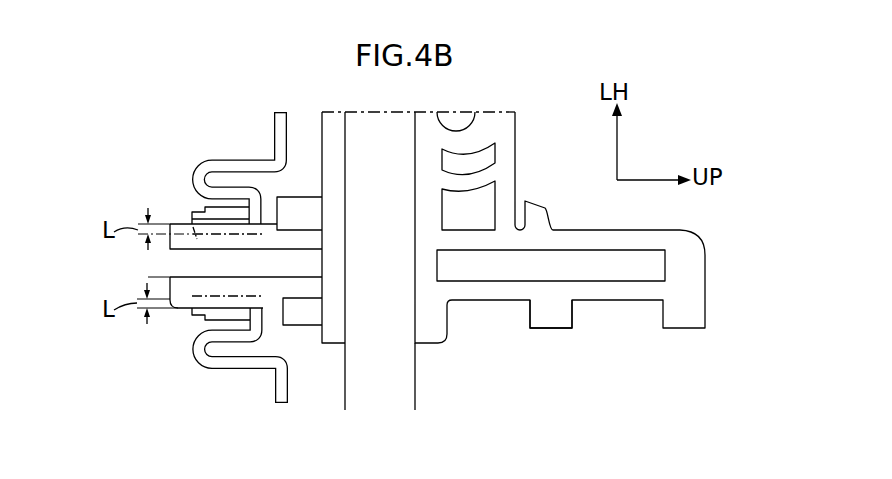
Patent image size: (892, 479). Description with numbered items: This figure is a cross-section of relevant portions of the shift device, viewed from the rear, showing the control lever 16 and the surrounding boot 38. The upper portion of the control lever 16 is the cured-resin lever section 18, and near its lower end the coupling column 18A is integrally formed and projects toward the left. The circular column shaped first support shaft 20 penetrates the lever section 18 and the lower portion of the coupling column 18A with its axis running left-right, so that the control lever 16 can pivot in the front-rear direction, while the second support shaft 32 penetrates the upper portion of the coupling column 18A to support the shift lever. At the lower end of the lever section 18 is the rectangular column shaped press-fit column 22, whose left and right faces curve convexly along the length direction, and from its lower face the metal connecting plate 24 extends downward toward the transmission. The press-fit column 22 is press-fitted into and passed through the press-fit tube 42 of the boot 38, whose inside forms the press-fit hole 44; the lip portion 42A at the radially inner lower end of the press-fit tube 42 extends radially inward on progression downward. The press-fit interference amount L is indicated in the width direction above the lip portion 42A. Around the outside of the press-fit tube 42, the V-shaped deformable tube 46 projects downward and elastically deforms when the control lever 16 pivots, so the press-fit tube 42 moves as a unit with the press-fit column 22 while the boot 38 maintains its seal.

The control lever 16 is at (698, 231).
The lever section 18 is at (551, 330).
The coupling column 18A is at (517, 151).
The first support shaft 20 is at (347, 372).
The press-fit column 22 is at (180, 222).
The connecting plate 24 is at (147, 280).
The second support shaft 32 is at (476, 122).
The boot 38 is at (267, 121).
The press-fit tube 42 is at (218, 220).
The lip portion 42A is at (262, 320).
The press-fit hole 44 is at (240, 302).
The deformable tube 46 is at (193, 176).